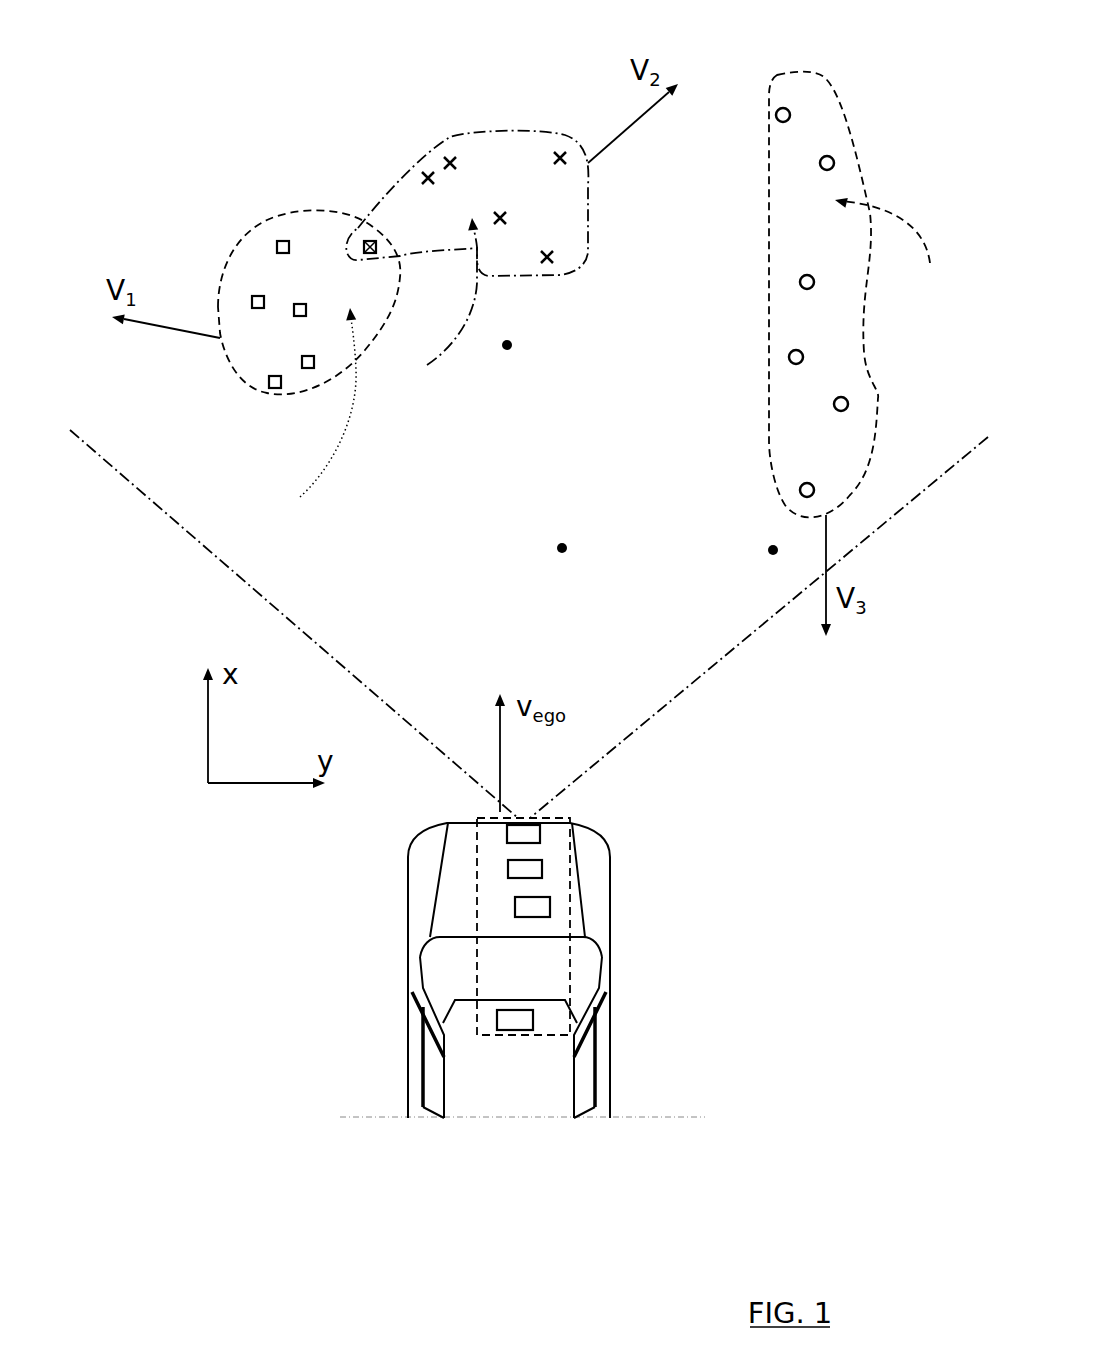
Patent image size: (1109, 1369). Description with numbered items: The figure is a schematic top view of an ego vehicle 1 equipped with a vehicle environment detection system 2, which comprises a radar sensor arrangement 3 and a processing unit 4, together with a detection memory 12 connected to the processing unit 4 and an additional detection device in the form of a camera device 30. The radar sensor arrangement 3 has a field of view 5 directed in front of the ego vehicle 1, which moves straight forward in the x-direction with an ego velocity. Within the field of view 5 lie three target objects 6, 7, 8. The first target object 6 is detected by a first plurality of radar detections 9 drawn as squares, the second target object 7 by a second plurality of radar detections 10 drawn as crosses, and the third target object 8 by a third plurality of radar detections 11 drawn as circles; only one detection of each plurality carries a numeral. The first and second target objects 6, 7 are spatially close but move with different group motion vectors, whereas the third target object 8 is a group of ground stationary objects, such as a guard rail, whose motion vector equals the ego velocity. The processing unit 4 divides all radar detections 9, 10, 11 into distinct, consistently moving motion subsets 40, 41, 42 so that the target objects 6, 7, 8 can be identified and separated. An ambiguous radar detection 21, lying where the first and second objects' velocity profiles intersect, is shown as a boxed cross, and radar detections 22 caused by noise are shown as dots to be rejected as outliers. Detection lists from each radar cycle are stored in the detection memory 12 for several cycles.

The ego vehicle 1 is at (487, 1080).
The vehicle environment detection system 2 is at (570, 978).
The radar sensor arrangement 3 is at (532, 832).
The processing unit 4 is at (538, 907).
The field of view 5 is at (650, 634).
The first target object 6 is at (223, 290).
The second target object 7 is at (533, 130).
The third target object 8 is at (772, 78).
The first plurality of radar detections 9 is at (283, 240).
The second plurality of radar detections 10 is at (451, 158).
The third plurality of radar detections 11 is at (827, 155).
The detection memory 12 is at (507, 868).
The ambiguous radar detection 21 is at (369, 240).
The radar detections due to noise 22 is at (773, 550).
The camera device 30 is at (522, 1018).
The first motion subset 40 is at (302, 418).
The second motion subset 41 is at (434, 311).
The third motion subset 42 is at (891, 248).